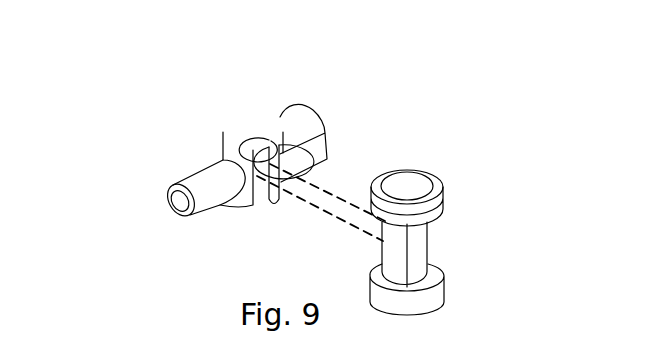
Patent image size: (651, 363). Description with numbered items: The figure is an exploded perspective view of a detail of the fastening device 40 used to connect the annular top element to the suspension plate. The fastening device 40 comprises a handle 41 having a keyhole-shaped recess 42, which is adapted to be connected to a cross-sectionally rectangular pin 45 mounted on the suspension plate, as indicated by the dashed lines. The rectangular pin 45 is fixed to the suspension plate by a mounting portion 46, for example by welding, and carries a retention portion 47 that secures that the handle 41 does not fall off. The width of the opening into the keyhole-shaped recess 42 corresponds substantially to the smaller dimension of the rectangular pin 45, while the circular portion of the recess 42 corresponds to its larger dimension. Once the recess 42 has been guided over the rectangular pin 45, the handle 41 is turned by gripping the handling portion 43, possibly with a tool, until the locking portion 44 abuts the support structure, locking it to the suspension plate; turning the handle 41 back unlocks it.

The fastening device 40 is at (190, 137).
The handle 41 is at (262, 118).
The keyhole-shaped recess 42 is at (258, 133).
The handling portion 43 is at (210, 177).
The locking portion 44 is at (292, 125).
The rectangular pin 45 is at (422, 252).
The mounting portion 46 is at (415, 303).
The retention portion 47 is at (408, 180).